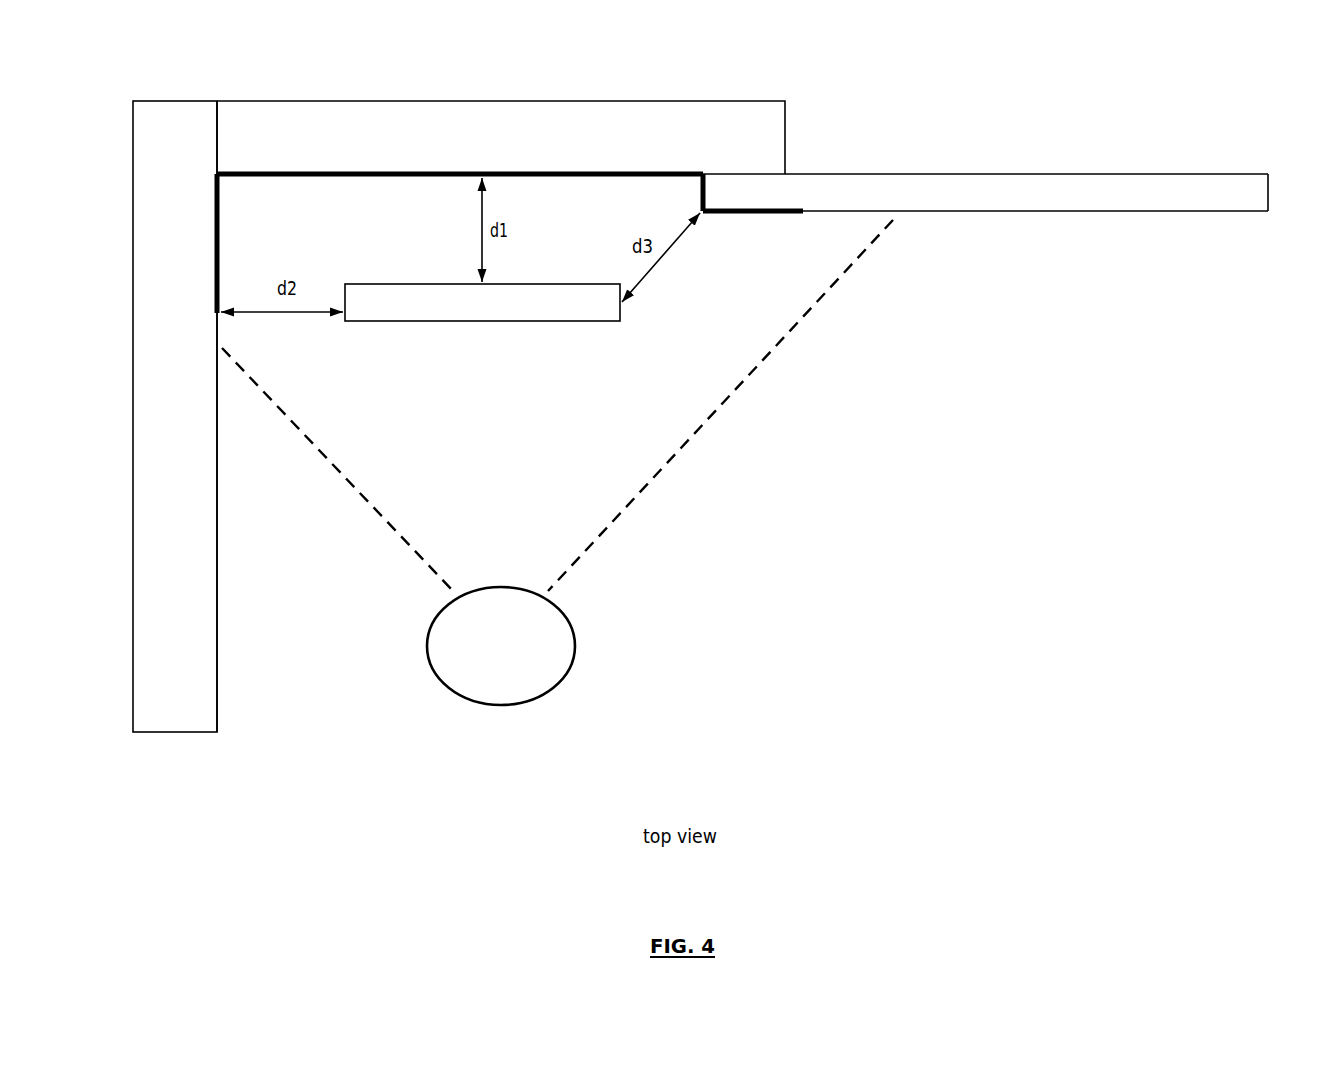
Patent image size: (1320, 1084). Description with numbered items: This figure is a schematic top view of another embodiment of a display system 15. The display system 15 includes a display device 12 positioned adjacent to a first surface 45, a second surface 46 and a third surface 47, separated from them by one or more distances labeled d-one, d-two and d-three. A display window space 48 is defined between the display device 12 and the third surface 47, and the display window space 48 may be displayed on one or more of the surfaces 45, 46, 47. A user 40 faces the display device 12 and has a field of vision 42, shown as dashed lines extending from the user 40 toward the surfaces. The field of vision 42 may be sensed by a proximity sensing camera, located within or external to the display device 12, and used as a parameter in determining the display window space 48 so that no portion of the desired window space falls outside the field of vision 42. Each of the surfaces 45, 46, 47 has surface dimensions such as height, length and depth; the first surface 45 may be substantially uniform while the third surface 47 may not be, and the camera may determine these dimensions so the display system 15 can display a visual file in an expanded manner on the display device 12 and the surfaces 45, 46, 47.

The display system 15 is at (298, 899).
The first surface 45 is at (185, 457).
The second surface 46 is at (565, 150).
The third surface 47 is at (1048, 206).
The display window space 48 is at (882, 66).
The display device 12 is at (560, 314).
The field of vision 42 is at (570, 541).
The user 40 is at (533, 658).